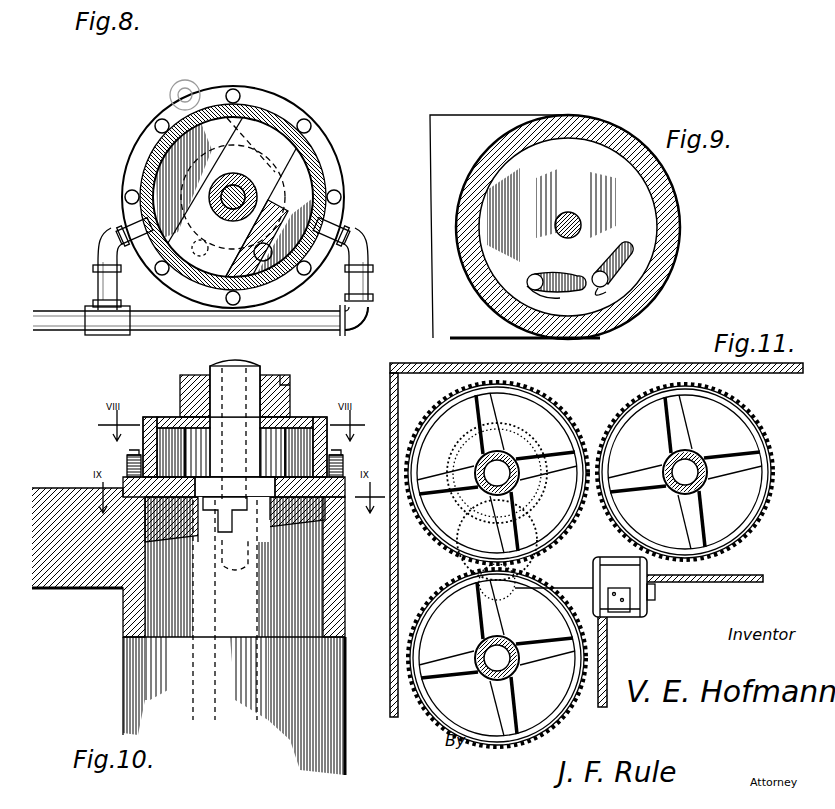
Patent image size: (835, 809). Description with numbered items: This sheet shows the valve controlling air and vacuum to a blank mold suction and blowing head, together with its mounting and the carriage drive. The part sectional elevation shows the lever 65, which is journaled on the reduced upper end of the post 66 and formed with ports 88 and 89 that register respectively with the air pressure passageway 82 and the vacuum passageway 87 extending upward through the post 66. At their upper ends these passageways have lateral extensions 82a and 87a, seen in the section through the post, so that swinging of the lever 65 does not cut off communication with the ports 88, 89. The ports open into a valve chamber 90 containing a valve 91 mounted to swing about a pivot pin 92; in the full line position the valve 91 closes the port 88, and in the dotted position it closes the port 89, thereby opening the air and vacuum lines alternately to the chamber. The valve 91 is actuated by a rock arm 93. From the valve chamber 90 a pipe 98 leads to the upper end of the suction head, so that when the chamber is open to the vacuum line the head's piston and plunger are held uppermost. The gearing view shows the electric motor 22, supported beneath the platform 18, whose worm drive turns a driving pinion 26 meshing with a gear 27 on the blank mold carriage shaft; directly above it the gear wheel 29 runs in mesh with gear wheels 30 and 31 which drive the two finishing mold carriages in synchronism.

In FIG. 11, the wheel base or platform 18 is at (392, 590).
In FIG. 11, the electric motor 22 is at (628, 618).
In FIG. 11, the driving pinion 26 is at (540, 575).
In FIG. 11, the gear 27 is at (524, 518).
In FIG. 11, the gear wheel 29 is at (562, 416).
In FIG. 11, the gear wheel 30 is at (757, 424).
In FIG. 11, the gear wheel 31 is at (557, 670).
In FIG. 9, the lever 65 is at (457, 125).
In FIG. 10, the lever 65 is at (66, 496).
In FIG. 9, the post 66 is at (655, 231).
In FIG. 10, the post 66 is at (133, 686).
In FIG. 9, the passageway 82 is at (530, 284).
In FIG. 10, the passageway 82 is at (191, 700).
In FIG. 9, the lateral extension 82a is at (566, 276).
In FIG. 9, the vacuum passageway 87 is at (603, 289).
In FIG. 10, the vacuum passageway 87 is at (257, 702).
In FIG. 9, the lateral extension 87a is at (613, 262).
In FIG. 10, the lateral extension 87a is at (326, 500).
In FIG. 8, the port 88 is at (127, 262).
In FIG. 10, the port 88 is at (211, 470).
In FIG. 8, the port 89 is at (292, 286).
In FIG. 10, the port 89 is at (268, 488).
In FIG. 8, the valve chamber 90 is at (305, 183).
In FIG. 10, the valve chamber 90 is at (309, 440).
In FIG. 8, the valve 91 is at (268, 138).
In FIG. 10, the valve 91 is at (170, 417).
In FIG. 8, the pivot pin 92 is at (224, 178).
In FIG. 9, the pivot pin 92 is at (569, 214).
In FIG. 10, the pivot pin 92 is at (250, 364).
In FIG. 8, the rock arm 93 is at (215, 98).
In FIG. 10, the rock arm 93 is at (187, 385).
In FIG. 8, the pipe 98 is at (57, 316).